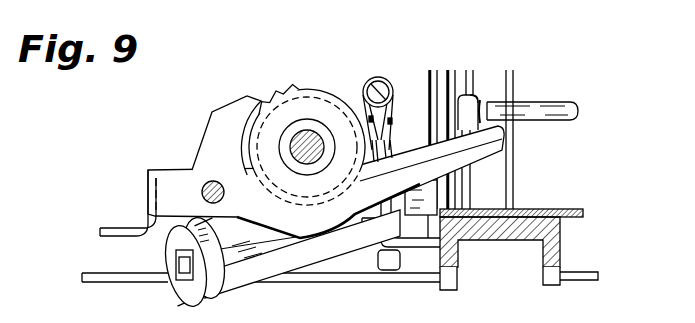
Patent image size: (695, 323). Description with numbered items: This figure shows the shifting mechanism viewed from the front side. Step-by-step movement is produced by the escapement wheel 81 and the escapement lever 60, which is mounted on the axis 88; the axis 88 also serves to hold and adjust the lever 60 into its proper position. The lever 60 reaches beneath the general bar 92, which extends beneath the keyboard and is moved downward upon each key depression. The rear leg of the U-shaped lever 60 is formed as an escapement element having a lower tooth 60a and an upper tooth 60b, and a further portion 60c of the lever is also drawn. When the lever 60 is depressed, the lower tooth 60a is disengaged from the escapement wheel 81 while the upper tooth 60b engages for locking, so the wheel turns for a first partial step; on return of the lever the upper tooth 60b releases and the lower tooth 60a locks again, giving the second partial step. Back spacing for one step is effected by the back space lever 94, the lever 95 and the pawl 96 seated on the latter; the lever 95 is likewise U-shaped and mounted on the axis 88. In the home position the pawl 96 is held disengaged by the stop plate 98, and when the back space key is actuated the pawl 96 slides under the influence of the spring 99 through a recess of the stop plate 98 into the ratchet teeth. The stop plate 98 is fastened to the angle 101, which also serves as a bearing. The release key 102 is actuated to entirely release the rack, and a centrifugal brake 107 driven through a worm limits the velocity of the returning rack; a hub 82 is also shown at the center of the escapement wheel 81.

The escapement lever 60 is at (150, 170).
The lower tooth 60a is at (317, 227).
The upper tooth 60b is at (228, 115).
The hook end of lever arm 60c is at (103, 230).
The escapement wheel 81 is at (280, 118).
The shaft hub 82 is at (307, 147).
The axis 88 is at (207, 183).
The general bar 92 is at (563, 112).
The back space lever 94 is at (468, 107).
The lever 95 is at (478, 98).
The pawl 96 is at (378, 77).
The stop plate 98 is at (370, 128).
The spring 99 is at (393, 120).
The angle 101 is at (424, 243).
The release key 102 is at (449, 72).
The centrifugal brake 107 is at (258, 273).